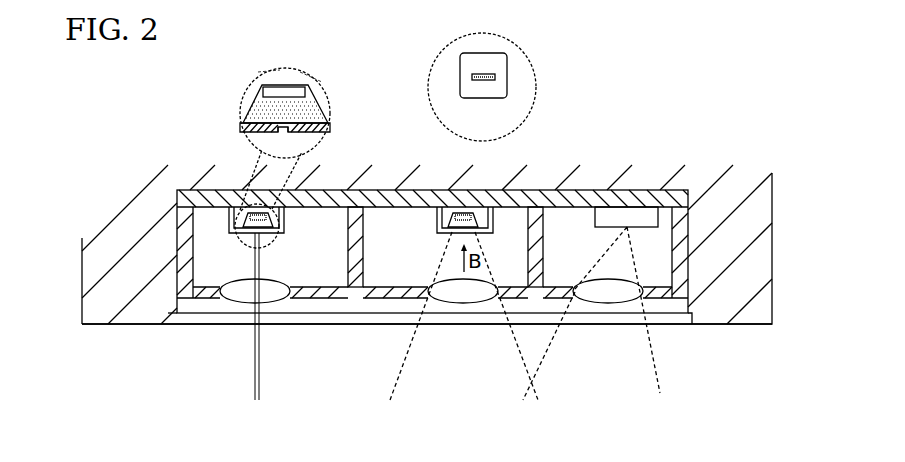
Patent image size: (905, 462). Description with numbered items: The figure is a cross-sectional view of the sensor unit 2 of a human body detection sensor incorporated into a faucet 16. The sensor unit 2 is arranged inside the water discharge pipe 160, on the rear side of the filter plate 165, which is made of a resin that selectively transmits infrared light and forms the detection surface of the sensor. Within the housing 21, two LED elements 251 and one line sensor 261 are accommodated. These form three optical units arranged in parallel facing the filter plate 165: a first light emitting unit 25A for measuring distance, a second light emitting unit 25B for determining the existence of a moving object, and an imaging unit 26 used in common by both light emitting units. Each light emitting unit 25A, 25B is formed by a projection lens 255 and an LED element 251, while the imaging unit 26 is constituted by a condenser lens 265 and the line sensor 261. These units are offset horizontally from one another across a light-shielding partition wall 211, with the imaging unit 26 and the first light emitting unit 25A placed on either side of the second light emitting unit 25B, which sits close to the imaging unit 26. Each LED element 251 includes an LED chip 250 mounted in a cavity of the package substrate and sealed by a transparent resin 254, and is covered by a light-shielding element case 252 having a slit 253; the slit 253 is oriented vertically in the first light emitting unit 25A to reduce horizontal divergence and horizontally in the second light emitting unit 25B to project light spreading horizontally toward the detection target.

The sensor unit 2 is at (170, 195).
The faucet 16 is at (701, 331).
The housing 21 is at (173, 253).
The first light emitting unit 25A is at (238, 306).
The second light emitting unit 25B is at (401, 303).
The imaging unit 26 is at (631, 311).
The water discharge pipe 160 is at (82, 326).
The filter plate 165 is at (192, 322).
The partition wall 211 is at (390, 207).
The LED chip 250 is at (308, 88).
The LED element 251 is at (228, 207).
The element case 252 is at (229, 222).
The slit 253 is at (284, 129).
The transparent resin 254 is at (262, 108).
The projection lens 255 is at (250, 303).
The line sensor 261 is at (642, 215).
The condenser lens 265 is at (609, 302).